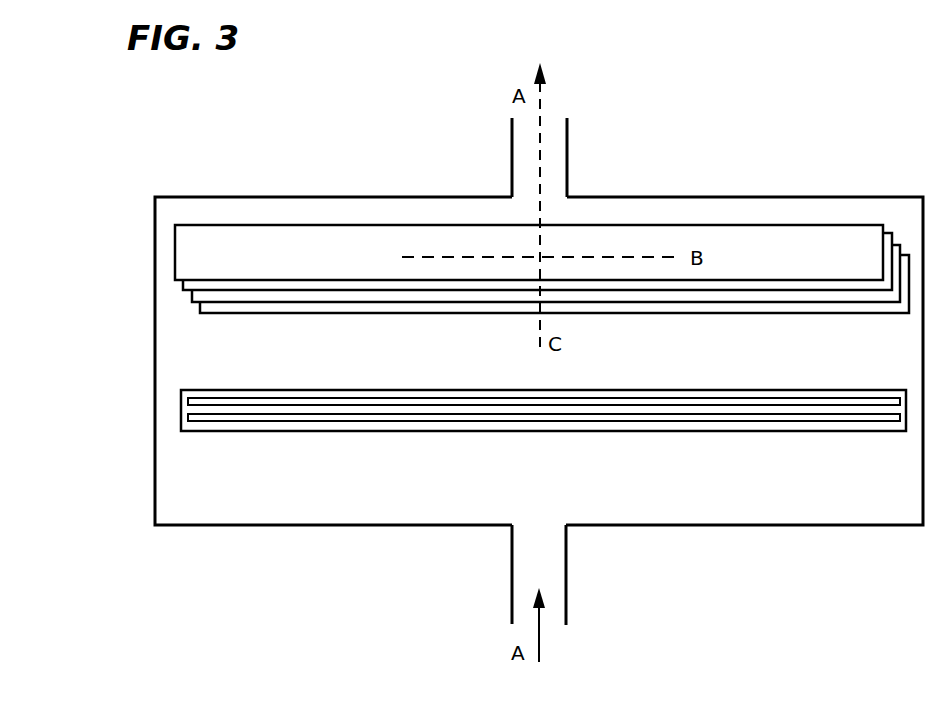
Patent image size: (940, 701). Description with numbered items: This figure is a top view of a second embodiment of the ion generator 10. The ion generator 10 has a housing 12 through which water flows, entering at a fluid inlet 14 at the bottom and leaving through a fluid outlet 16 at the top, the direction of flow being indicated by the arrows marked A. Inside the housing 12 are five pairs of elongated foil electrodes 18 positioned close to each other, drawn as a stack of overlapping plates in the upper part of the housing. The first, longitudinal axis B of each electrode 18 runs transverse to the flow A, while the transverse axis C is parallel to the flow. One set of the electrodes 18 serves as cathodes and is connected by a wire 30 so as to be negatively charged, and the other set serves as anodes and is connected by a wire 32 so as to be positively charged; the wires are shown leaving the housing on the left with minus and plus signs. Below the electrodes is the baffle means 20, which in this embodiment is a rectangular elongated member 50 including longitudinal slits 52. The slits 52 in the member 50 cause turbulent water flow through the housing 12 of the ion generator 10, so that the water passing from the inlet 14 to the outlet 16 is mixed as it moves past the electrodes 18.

The ion generator 10 is at (772, 74).
The housing 12 is at (780, 197).
The fluid inlet 14 is at (547, 556).
The fluid outlet 16 is at (567, 165).
The elongated foil electrodes 18 is at (476, 304).
The baffle means 20 is at (543, 422).
The wire 30 is at (185, 252).
The wire 32 is at (184, 286).
The rectangular elongated member 50 is at (380, 432).
The longitudinal slits 52 is at (822, 400).